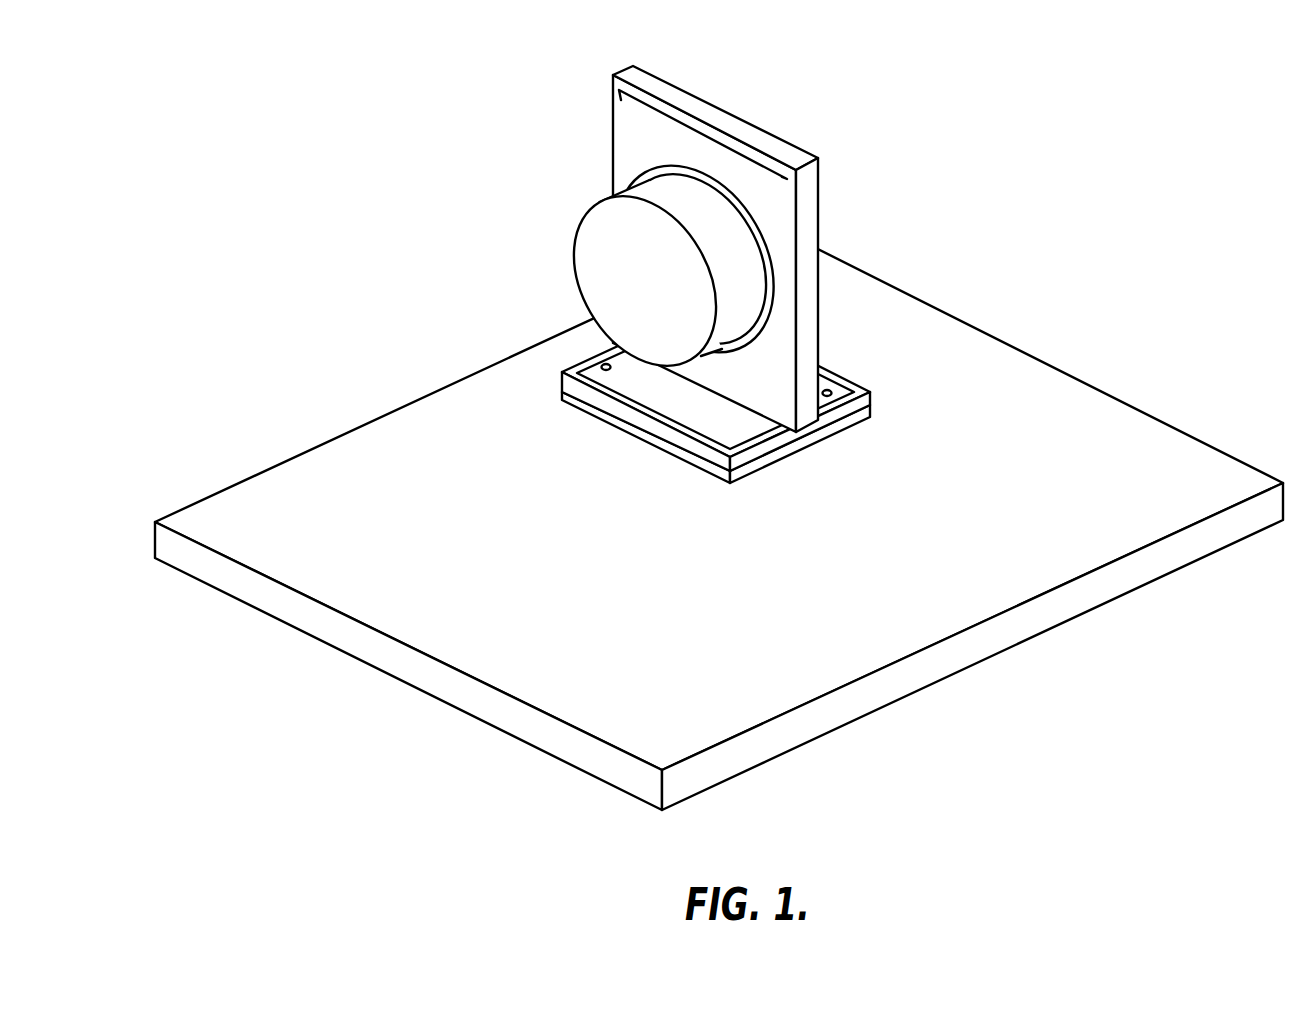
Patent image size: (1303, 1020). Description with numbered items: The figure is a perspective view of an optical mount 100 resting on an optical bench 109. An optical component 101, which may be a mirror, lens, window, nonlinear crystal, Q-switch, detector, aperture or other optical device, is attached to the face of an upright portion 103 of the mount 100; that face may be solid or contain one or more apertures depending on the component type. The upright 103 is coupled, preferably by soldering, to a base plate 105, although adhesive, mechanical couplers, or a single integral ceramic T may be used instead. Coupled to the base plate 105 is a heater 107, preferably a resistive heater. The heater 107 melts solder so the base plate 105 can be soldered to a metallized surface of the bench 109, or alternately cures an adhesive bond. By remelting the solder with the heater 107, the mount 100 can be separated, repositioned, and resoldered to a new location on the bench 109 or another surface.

The optical mount 100 is at (736, 287).
The optical component 101 is at (597, 228).
The upright portion 103 is at (818, 190).
The base plate 105 is at (870, 398).
The heater 107 is at (657, 448).
The optical bench 109 is at (1010, 582).